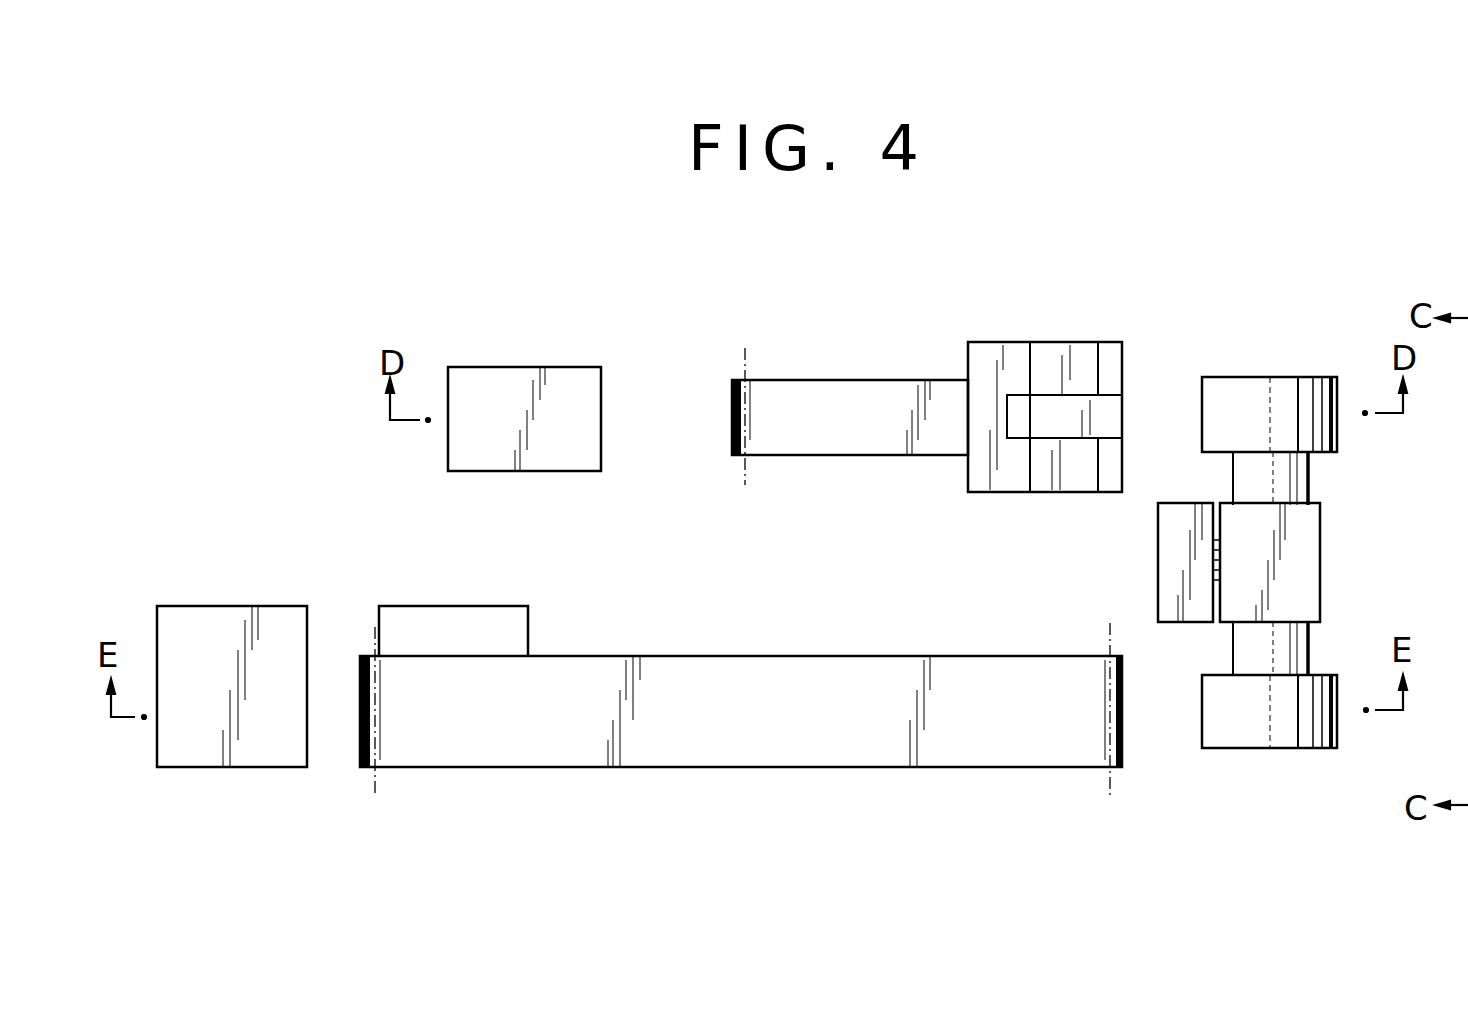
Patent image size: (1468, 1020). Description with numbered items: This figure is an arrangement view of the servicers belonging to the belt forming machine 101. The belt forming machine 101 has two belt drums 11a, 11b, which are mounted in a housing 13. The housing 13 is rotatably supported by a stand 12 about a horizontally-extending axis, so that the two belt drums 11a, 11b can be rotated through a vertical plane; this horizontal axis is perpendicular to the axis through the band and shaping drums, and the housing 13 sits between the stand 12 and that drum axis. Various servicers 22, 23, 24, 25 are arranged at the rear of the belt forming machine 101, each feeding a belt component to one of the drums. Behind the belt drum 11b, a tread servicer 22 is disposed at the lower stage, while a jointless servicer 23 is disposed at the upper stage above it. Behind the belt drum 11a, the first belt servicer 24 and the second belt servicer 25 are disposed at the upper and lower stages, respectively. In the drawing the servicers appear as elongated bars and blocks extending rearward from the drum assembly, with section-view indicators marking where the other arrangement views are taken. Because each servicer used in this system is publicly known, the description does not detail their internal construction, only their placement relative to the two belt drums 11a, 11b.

The belt forming machine 101 is at (1328, 326).
The belt drum 11a is at (1249, 730).
The belt drum 11b is at (1247, 397).
The stand 12 is at (1158, 555).
The housing 13 is at (1322, 551).
The tread servicer 22 is at (880, 456).
The jointless servicer 23 is at (1055, 342).
The No.1 belt servicer 24 is at (855, 767).
The No.2 belt servicer 25 is at (730, 656).